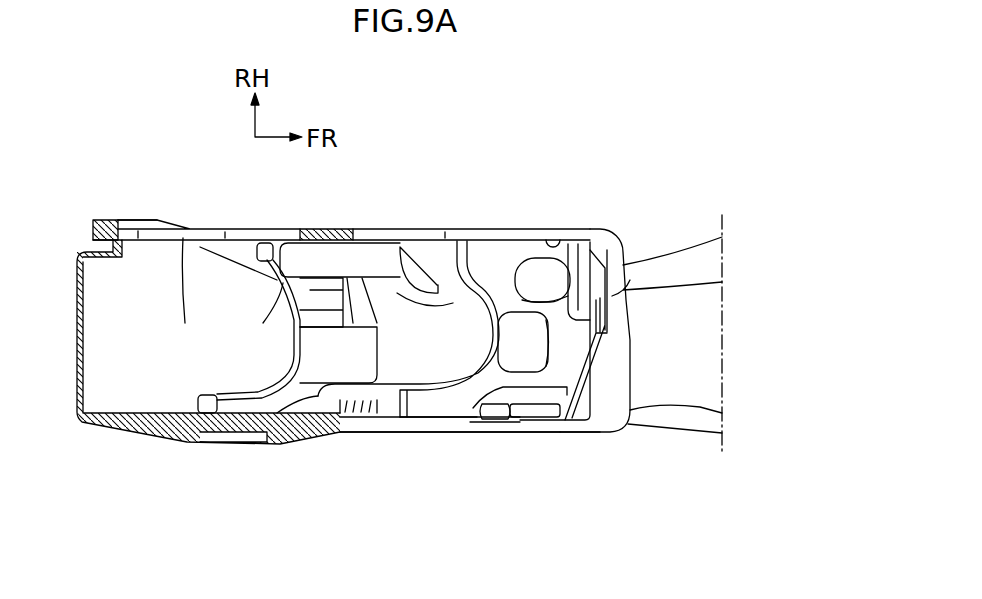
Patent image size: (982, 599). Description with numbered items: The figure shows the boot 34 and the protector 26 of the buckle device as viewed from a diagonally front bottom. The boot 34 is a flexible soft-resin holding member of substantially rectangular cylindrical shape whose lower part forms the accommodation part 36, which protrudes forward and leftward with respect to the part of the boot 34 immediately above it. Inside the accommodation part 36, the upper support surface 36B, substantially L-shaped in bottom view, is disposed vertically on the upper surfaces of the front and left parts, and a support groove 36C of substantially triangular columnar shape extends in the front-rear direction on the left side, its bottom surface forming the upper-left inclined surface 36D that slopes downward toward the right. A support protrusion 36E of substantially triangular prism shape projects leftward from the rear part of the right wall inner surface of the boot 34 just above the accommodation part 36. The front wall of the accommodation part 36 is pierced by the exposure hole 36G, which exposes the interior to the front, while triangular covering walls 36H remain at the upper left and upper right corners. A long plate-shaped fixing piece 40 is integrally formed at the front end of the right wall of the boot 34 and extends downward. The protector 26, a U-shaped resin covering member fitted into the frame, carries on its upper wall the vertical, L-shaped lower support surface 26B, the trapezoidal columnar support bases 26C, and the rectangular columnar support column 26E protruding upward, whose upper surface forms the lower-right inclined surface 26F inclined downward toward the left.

The protector 26 is at (290, 344).
The lower support surface 26B is at (643, 259).
The support base 26C is at (530, 422).
The support column 26E is at (400, 243).
The lower-right inclined surface 26F is at (416, 247).
The boot 34 is at (672, 421).
The accommodation part 36 is at (233, 229).
The upper support surface 36B is at (605, 313).
The support groove 36C is at (493, 422).
The upper-left inclined surface 36D is at (486, 420).
The support protrusion 36E is at (445, 288).
The exposure hole 36G is at (552, 242).
The covering wall 36H is at (592, 242).
The fixing piece 40 is at (288, 229).